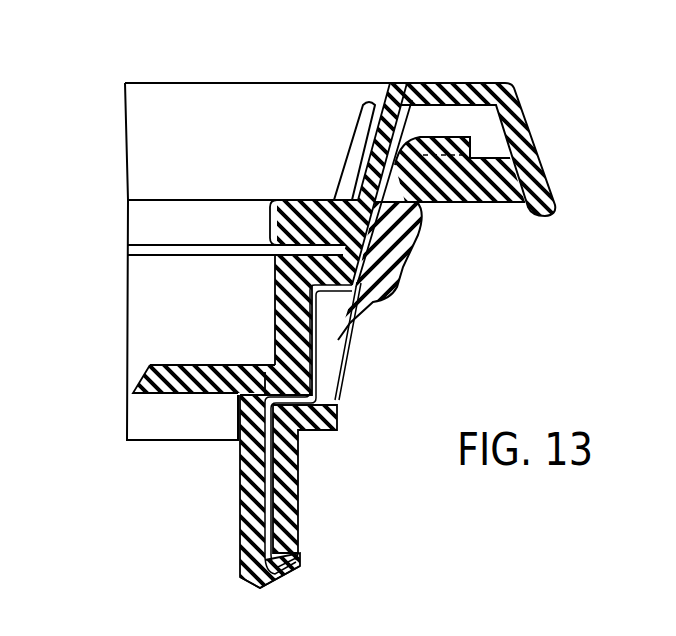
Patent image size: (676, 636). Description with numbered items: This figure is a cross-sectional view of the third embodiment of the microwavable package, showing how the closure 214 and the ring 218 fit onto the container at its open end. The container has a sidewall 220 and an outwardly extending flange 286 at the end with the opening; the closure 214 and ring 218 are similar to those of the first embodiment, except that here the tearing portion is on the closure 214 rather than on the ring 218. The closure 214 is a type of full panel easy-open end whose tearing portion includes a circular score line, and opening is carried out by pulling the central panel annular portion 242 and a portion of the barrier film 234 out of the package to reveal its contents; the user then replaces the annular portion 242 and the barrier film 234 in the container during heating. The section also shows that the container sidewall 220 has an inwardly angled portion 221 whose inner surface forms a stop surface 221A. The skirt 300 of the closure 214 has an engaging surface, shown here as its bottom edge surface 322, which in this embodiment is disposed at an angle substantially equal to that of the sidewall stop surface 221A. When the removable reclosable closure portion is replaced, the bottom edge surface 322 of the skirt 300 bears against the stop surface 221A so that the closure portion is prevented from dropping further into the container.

The closure 214 is at (131, 380).
The ring 218 is at (494, 78).
The outwardly extending flange 286 is at (488, 196).
The central panel annular portion 242 is at (205, 374).
The barrier film 234 is at (140, 398).
The skirt 300 is at (240, 462).
The sidewall 220 is at (290, 472).
The inwardly angled portion 221 is at (300, 520).
The stop surface 221A is at (288, 556).
The bottom edge surface 322 is at (240, 552).